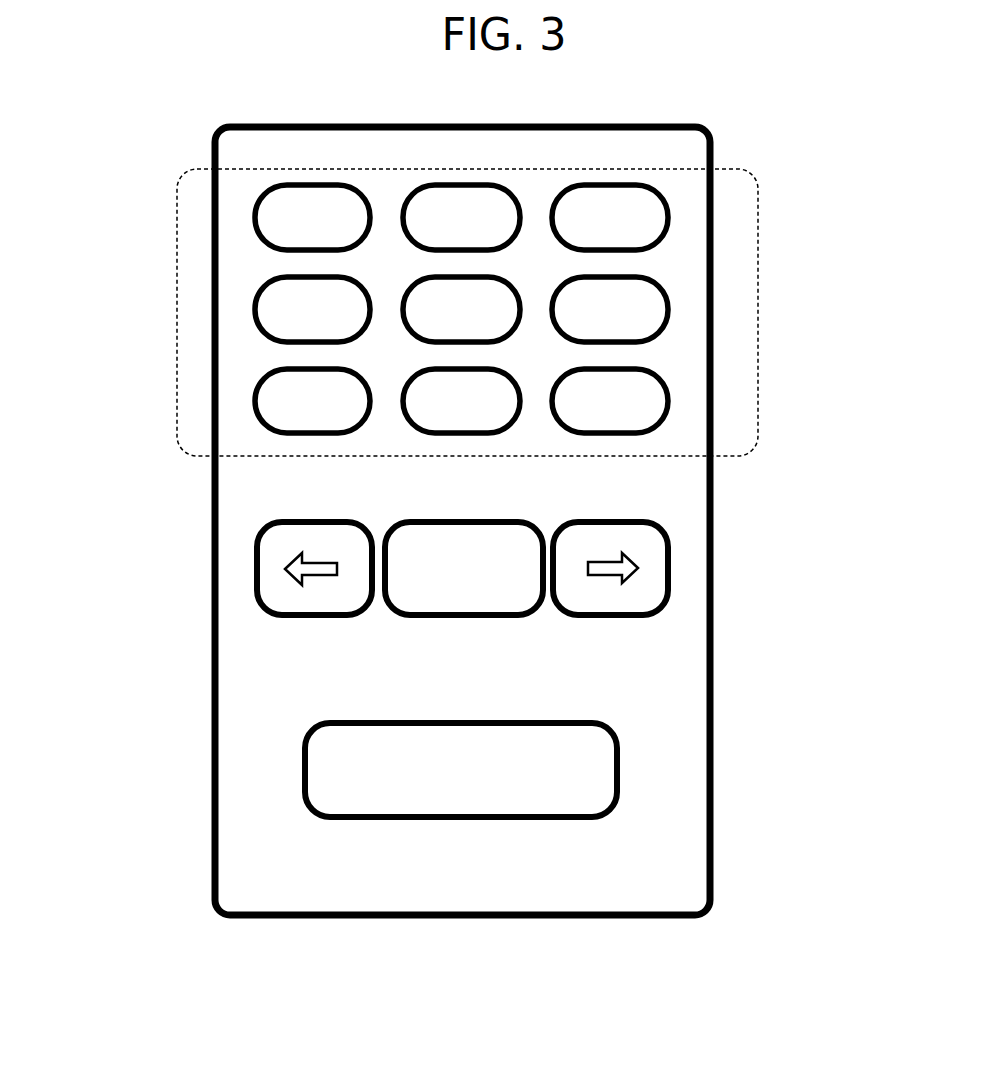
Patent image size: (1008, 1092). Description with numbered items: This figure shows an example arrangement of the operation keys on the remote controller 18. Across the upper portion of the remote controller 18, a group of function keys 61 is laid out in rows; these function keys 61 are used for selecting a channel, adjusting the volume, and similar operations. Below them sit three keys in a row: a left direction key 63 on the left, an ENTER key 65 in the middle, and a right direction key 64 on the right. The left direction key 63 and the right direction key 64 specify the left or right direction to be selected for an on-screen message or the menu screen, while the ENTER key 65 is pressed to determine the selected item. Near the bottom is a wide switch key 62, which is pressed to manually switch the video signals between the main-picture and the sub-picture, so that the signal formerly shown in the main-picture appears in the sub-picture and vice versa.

The remote controller 18 is at (215, 737).
The function keys 61 is at (748, 173).
The switch key 62 is at (617, 738).
The left direction key 63 is at (260, 565).
The right direction key 64 is at (668, 565).
The ENTER key 65 is at (460, 615).